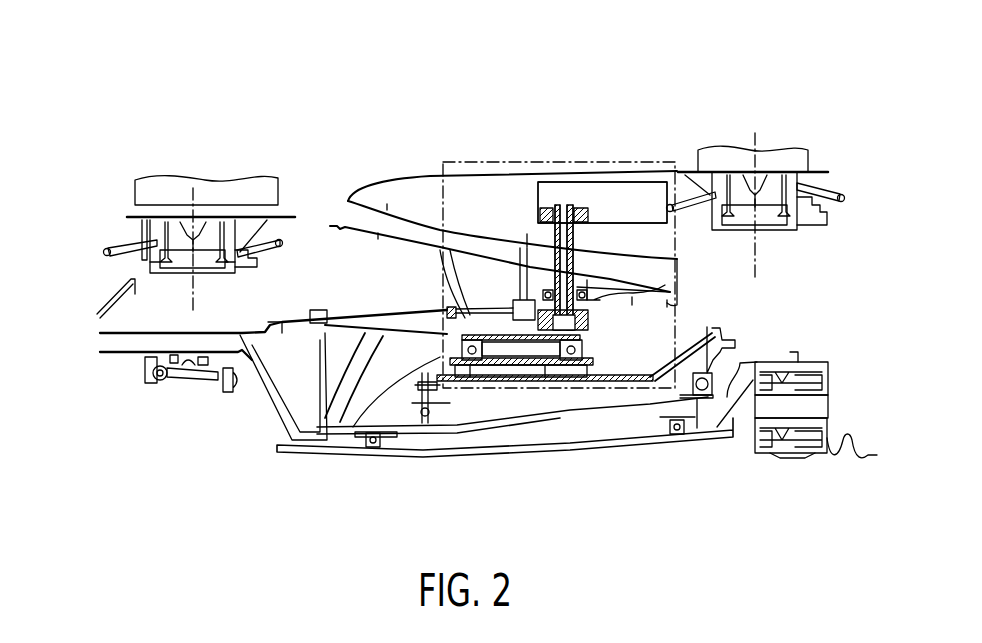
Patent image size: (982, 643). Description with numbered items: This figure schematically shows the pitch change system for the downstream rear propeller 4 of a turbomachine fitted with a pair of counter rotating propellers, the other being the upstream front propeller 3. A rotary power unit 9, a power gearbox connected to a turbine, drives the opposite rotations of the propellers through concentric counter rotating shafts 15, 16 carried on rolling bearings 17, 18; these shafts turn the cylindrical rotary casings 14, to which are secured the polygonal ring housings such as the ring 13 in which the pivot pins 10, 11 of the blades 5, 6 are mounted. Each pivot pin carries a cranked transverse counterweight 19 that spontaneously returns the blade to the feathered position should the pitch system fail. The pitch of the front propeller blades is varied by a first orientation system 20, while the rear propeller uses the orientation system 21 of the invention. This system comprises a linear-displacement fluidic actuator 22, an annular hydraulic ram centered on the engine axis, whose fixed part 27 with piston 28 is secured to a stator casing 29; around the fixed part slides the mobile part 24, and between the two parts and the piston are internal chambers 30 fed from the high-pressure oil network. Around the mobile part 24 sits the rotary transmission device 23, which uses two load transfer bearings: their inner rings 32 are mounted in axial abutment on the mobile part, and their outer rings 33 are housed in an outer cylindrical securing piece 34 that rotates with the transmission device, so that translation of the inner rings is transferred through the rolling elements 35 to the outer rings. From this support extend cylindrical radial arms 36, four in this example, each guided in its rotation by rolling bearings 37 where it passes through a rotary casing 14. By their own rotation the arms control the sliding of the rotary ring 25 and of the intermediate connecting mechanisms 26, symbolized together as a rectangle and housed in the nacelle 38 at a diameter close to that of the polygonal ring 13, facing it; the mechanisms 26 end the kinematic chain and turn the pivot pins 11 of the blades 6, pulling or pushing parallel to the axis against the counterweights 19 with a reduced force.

The upstream front propeller 3 is at (187, 198).
The downstream rear propeller 4 is at (766, 160).
The blade 5 is at (230, 192).
The blade 6 is at (772, 160).
The rotary power unit 9 is at (768, 455).
The pivot pin 10 is at (173, 225).
The pivot pin 11 is at (737, 180).
The rotary polygonal ring housing 13 is at (807, 197).
The rotary casing 14 is at (617, 293).
The shaft 15 is at (440, 450).
The shaft 16 is at (607, 412).
The rolling bearing 17 is at (373, 449).
The rolling bearing 18 is at (424, 418).
The counterweight 19 is at (123, 242).
The blade pitch change system 20 is at (187, 393).
The orientation system 21 is at (512, 196).
The linear-displacement fluidic actuator 22 is at (440, 373).
The rotary transmission device 23 is at (531, 229).
The mobile part 24 is at (515, 363).
The sliding rotary ring 25 is at (600, 190).
The intermediate connecting mechanisms 26 is at (602, 202).
The fixed part 27 is at (505, 377).
The piston 28 is at (545, 365).
The stator casing 29 is at (637, 380).
The internal chamber 30 is at (485, 368).
The inner ring 32 is at (430, 367).
The outer ring 33 is at (463, 337).
The outer cylindrical securing piece 34 is at (457, 320).
The rolling element 35 is at (325, 322).
The radial arm 36 is at (440, 252).
The rolling bearing 37 is at (588, 298).
The nacelle 38 is at (470, 193).